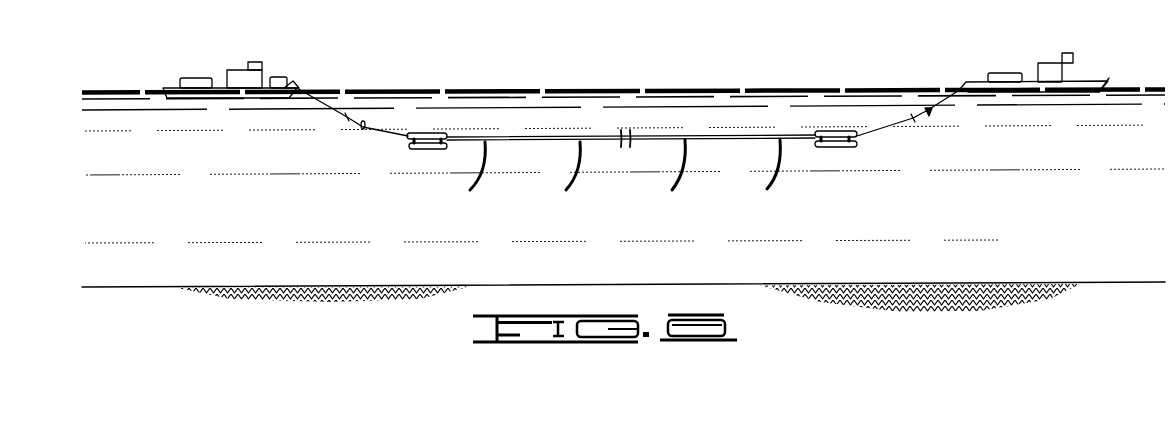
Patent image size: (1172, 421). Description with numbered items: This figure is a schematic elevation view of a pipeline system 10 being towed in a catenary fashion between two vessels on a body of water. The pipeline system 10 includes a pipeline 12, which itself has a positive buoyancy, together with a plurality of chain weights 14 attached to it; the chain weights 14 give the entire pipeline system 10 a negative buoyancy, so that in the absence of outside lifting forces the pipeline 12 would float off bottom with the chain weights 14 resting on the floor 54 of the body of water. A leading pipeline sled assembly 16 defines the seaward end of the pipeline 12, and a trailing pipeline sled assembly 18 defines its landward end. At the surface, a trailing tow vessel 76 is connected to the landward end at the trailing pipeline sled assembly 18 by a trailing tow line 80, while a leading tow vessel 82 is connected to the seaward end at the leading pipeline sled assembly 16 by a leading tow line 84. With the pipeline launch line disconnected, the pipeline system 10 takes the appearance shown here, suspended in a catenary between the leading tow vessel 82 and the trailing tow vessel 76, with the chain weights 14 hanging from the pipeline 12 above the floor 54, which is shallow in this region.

The pipeline system 10 is at (631, 129).
The pipeline 12 is at (650, 133).
The chain weights 14 is at (490, 158).
The leading pipeline sled assembly 16 is at (833, 131).
The trailing pipeline sled assembly 18 is at (435, 133).
The floor 54 is at (535, 284).
The trailing tow vessel 76 is at (250, 77).
The trailing tow line 80 is at (359, 131).
The leading tow vessel 82 is at (1051, 67).
The leading tow line 84 is at (930, 114).